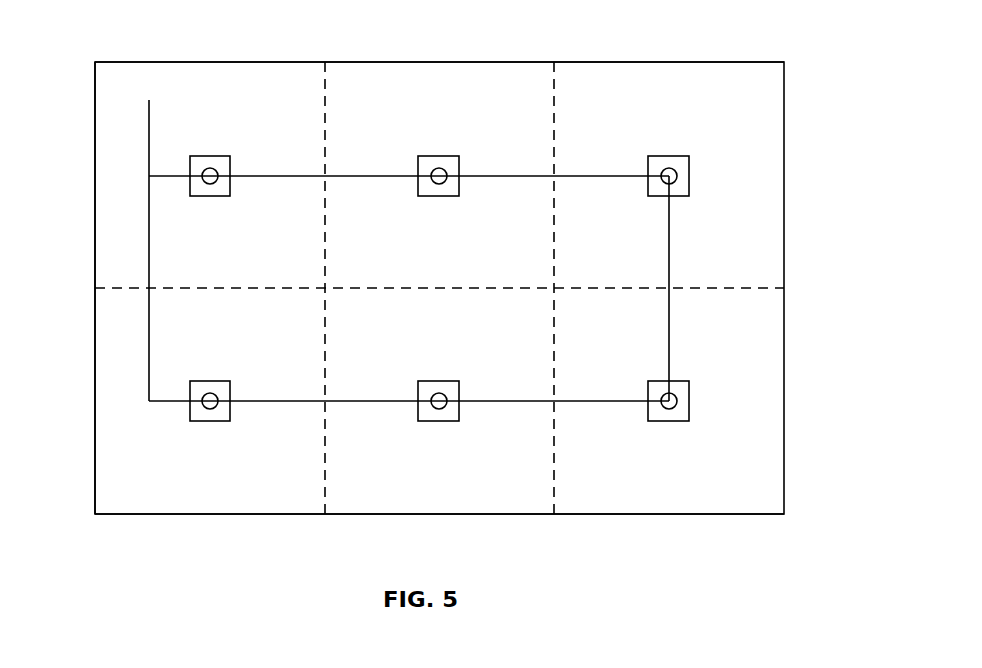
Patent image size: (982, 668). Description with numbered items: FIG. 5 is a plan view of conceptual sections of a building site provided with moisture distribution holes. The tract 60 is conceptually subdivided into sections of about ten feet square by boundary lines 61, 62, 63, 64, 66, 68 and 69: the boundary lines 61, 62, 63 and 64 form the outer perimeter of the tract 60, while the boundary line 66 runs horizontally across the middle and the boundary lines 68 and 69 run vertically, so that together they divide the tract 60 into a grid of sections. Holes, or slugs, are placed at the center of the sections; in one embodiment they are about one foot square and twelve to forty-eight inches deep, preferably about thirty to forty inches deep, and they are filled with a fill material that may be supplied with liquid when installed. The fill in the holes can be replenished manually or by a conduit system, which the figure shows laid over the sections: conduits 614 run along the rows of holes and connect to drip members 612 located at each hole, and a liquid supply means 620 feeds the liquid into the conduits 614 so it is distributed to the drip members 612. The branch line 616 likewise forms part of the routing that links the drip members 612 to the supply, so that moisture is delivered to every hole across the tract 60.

The tract 60 is at (769, 36).
The boundary line 61 is at (784, 182).
The boundary line 62 is at (415, 514).
The boundary line 63 is at (95, 348).
The boundary line 64 is at (440, 62).
The boundary line 66 is at (430, 288).
The boundary line 68 is at (554, 345).
The boundary line 69 is at (325, 345).
The drip member 612 is at (210, 196).
The conduit 614 is at (345, 176).
The conductive trace 616 is at (208, 156).
The liquid supply means 620 is at (706, 119).